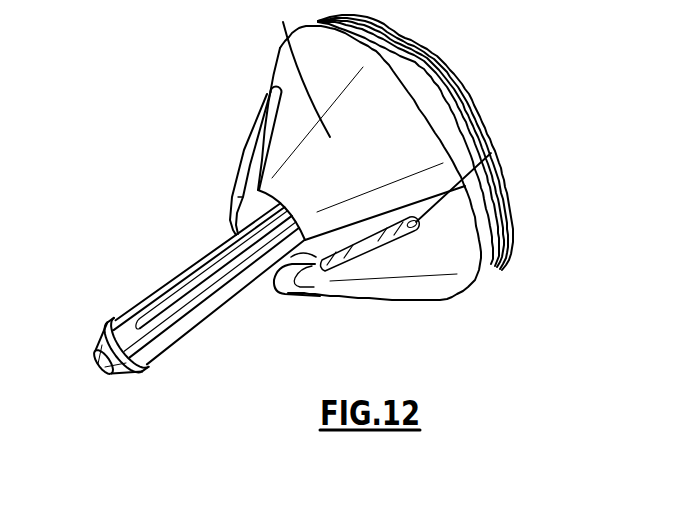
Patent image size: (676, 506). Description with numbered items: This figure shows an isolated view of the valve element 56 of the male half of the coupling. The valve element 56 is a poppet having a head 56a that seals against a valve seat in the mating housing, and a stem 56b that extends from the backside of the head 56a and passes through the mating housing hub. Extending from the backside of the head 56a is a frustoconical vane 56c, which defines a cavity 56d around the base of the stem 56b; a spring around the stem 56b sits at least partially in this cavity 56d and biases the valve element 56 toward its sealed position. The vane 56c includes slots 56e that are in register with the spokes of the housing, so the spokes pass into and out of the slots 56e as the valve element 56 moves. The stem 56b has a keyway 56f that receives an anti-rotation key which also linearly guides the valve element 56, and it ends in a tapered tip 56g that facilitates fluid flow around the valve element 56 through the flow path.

The valve element 56 is at (273, 298).
The head 56a is at (500, 266).
The stem 56b is at (182, 348).
The frustoconical vane 56c is at (290, 34).
The cavity 56d is at (377, 232).
The slots 56e is at (265, 113).
The keyway 56f is at (197, 286).
The tapered tip 56g is at (112, 378).